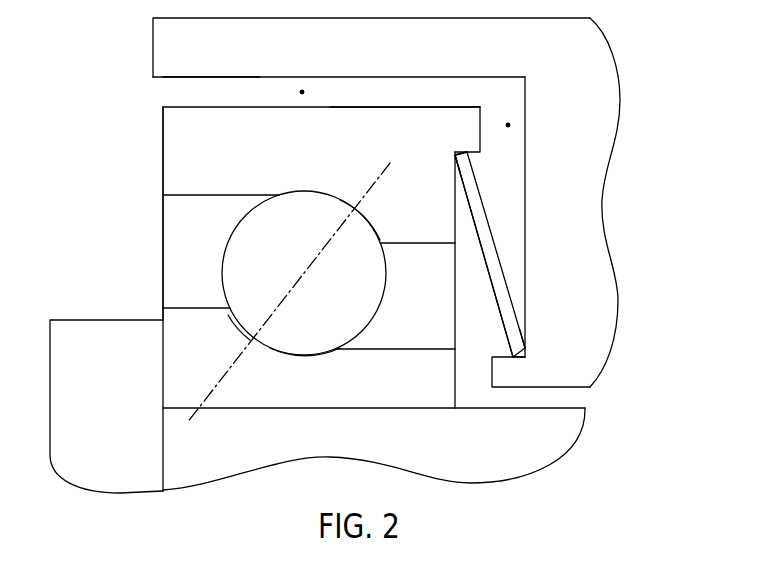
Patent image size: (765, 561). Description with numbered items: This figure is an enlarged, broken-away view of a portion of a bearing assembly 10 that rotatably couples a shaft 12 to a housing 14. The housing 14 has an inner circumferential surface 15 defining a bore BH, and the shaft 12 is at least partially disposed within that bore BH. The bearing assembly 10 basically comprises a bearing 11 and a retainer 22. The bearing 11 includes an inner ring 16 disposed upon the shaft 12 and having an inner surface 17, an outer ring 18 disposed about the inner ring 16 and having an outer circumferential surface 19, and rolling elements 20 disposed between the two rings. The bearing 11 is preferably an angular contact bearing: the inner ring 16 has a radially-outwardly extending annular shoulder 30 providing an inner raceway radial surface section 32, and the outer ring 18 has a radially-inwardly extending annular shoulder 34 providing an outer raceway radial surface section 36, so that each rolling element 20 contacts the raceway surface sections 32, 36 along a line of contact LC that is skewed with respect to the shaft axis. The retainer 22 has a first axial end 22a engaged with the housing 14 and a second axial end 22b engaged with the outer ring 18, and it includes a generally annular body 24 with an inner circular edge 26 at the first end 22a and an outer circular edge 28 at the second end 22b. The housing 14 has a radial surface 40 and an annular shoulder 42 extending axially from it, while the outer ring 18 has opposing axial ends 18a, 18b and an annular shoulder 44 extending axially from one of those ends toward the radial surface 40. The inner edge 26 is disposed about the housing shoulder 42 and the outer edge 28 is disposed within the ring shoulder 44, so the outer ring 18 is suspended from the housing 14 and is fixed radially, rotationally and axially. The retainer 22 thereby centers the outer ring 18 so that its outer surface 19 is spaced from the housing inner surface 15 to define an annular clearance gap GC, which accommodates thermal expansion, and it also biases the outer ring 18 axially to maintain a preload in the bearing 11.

The bearing assembly 10 is at (597, 128).
The bearing 11 is at (157, 160).
The shaft 12 is at (583, 433).
The housing 14 is at (613, 60).
The inner circumferential surface 15 is at (198, 77).
The inner ring 16 is at (388, 410).
The inner surface 17 is at (310, 347).
The outer ring 18 is at (252, 104).
The axial end 18a is at (455, 203).
The axial end 18b is at (163, 130).
The outer circumferential surface 19 is at (355, 107).
The rolling elements 20 is at (221, 268).
The retainer 22 is at (527, 238).
The first axial end 22a is at (526, 343).
The second axial end 22b is at (463, 168).
The annular body 24 is at (506, 278).
The inner circular edge 26 is at (521, 357).
The outer circular edge 28 is at (461, 158).
The annular shoulder 30 is at (190, 322).
The inner raceway radial surface section 32 is at (240, 322).
The annular shoulder 34 is at (422, 233).
The outer raceway radial surface section 36 is at (368, 222).
The radial surface 40 is at (525, 205).
The annular shoulder 42 is at (502, 372).
The annular shoulder 44 is at (468, 121).
The clearance gap GC is at (302, 90).
The bore BH is at (510, 125).
The line of contact LC is at (377, 178).